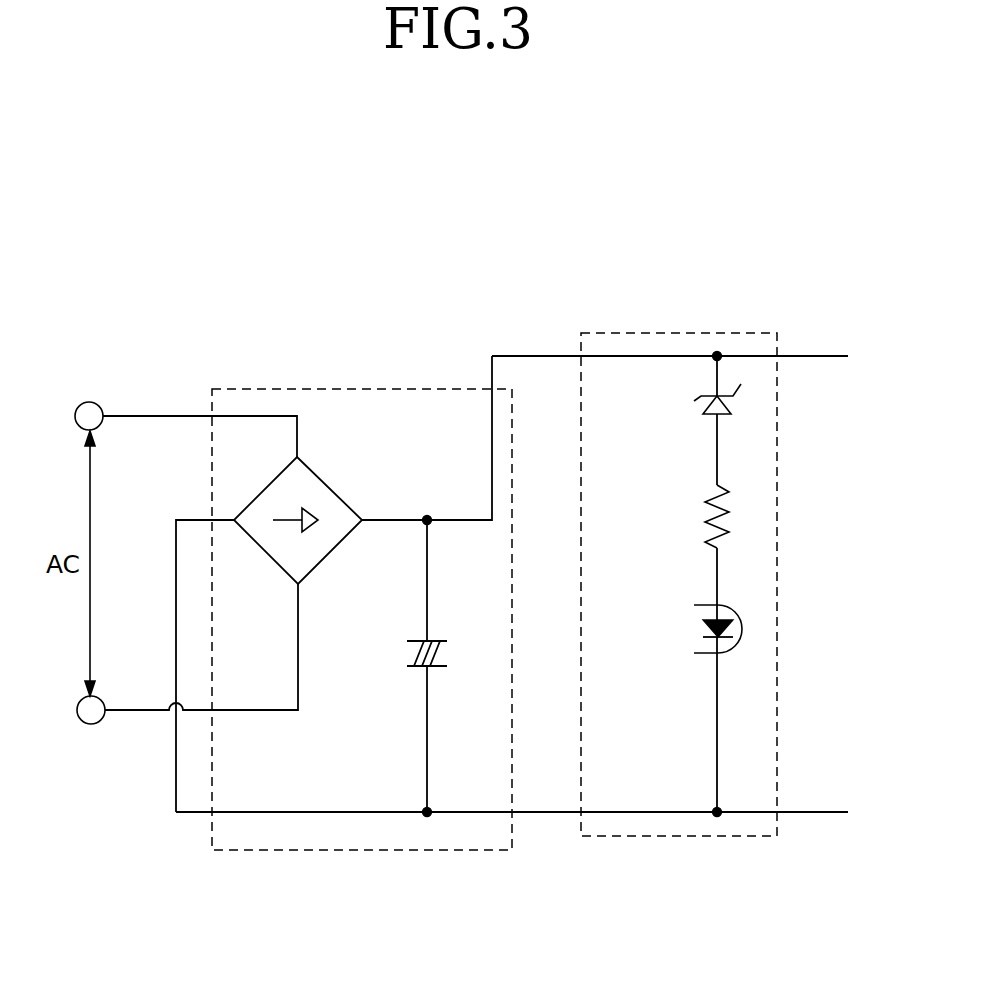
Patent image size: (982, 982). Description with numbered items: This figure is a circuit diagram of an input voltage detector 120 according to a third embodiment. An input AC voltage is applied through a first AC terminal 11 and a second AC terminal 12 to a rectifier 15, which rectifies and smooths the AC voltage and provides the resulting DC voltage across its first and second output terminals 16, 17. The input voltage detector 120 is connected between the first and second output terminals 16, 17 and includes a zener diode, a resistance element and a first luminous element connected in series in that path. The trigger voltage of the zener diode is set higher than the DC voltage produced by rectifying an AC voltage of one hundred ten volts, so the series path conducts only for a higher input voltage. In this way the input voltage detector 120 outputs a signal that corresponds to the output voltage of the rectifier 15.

The first AC terminal 11 is at (155, 413).
The second AC terminal 12 is at (130, 722).
The rectifier 15 is at (313, 389).
The first output terminal 16 is at (542, 355).
The second output terminal 17 is at (548, 813).
The input voltage detector 120 is at (676, 333).